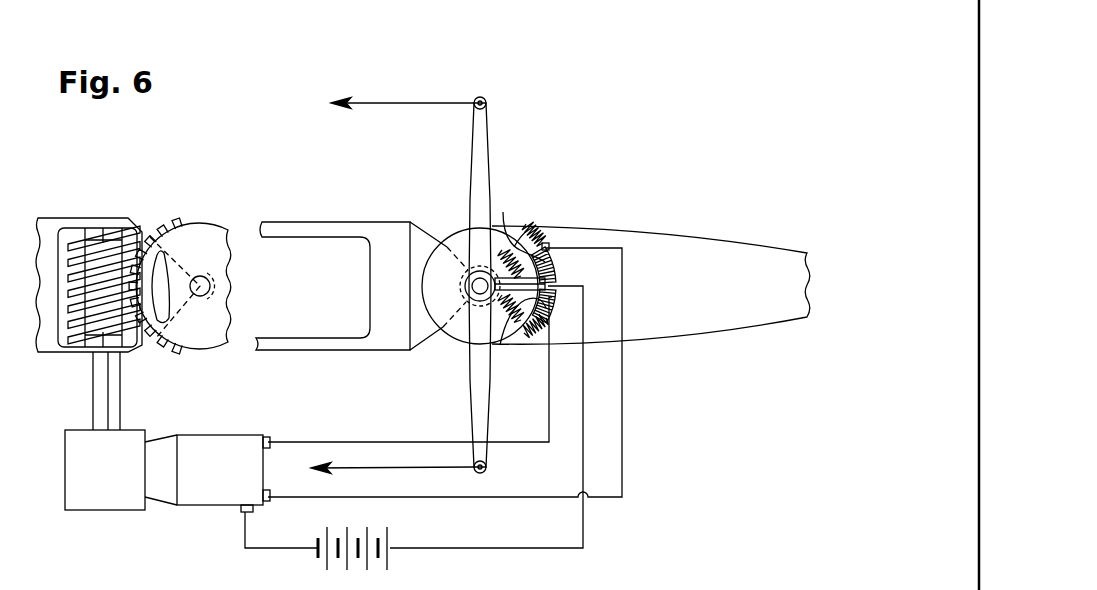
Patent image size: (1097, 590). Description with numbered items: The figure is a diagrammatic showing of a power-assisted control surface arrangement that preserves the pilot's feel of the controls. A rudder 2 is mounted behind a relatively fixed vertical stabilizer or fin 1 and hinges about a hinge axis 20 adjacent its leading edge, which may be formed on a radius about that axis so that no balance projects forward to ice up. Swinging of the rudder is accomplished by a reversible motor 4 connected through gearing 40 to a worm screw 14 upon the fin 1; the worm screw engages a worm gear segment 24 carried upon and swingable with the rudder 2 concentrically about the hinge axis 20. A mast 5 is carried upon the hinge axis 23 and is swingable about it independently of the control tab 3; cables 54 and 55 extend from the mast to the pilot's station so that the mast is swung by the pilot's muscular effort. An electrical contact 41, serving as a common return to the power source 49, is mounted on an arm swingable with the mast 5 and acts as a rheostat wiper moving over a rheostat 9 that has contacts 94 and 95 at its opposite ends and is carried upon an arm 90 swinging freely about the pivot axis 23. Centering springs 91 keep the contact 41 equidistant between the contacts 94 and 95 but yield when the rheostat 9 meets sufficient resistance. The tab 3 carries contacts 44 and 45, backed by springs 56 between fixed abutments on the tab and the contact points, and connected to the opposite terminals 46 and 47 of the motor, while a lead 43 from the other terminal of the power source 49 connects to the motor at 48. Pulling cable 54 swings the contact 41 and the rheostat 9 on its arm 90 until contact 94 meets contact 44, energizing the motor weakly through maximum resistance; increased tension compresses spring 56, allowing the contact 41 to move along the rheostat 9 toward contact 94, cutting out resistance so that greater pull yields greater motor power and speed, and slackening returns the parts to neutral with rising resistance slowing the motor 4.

The vertical stabilizer or fin 1 is at (56, 228).
The worm screw 14 is at (97, 258).
The worm gear segment 24 is at (157, 236).
The hinge axis 20 is at (206, 289).
The rudder 2 is at (330, 224).
The hinge axis 23 is at (480, 268).
The mast 5 is at (486, 167).
The cable 54 is at (375, 103).
The cable 55 is at (410, 465).
The control tab 3 is at (722, 247).
The electrical contact 41 is at (554, 283).
The arm 90 is at (553, 297).
The centering springs 91 is at (503, 212).
The springs 56 is at (538, 240).
The contact 44 is at (547, 246).
The contact 94 is at (553, 262).
The contact 95 is at (553, 305).
The contact 45 is at (548, 325).
The rheostat 9 is at (504, 340).
The gearing 40 is at (105, 431).
The motor 4 is at (204, 470).
The motor terminal 47 is at (271, 440).
The motor terminal 46 is at (270, 500).
The motor connection 48 is at (243, 513).
The lead 43 is at (264, 550).
The power source 49 is at (358, 563).